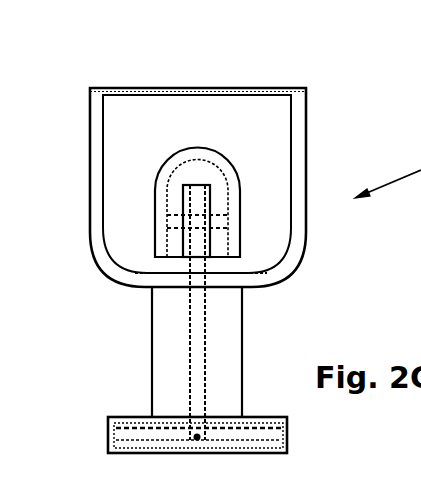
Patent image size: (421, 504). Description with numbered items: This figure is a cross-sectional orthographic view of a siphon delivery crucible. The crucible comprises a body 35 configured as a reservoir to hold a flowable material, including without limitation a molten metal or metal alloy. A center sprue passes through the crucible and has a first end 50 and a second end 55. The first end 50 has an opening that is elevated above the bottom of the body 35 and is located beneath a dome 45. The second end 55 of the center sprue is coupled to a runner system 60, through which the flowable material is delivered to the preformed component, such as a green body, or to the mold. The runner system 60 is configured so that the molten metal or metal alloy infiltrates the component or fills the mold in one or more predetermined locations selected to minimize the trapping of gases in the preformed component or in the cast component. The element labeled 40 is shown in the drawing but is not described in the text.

The body 35 is at (257, 110).
The stem 40 is at (205, 332).
The dome 45 is at (170, 160).
The first end 50 is at (196, 184).
The second end 55 is at (197, 440).
The runner system 60 is at (117, 435).